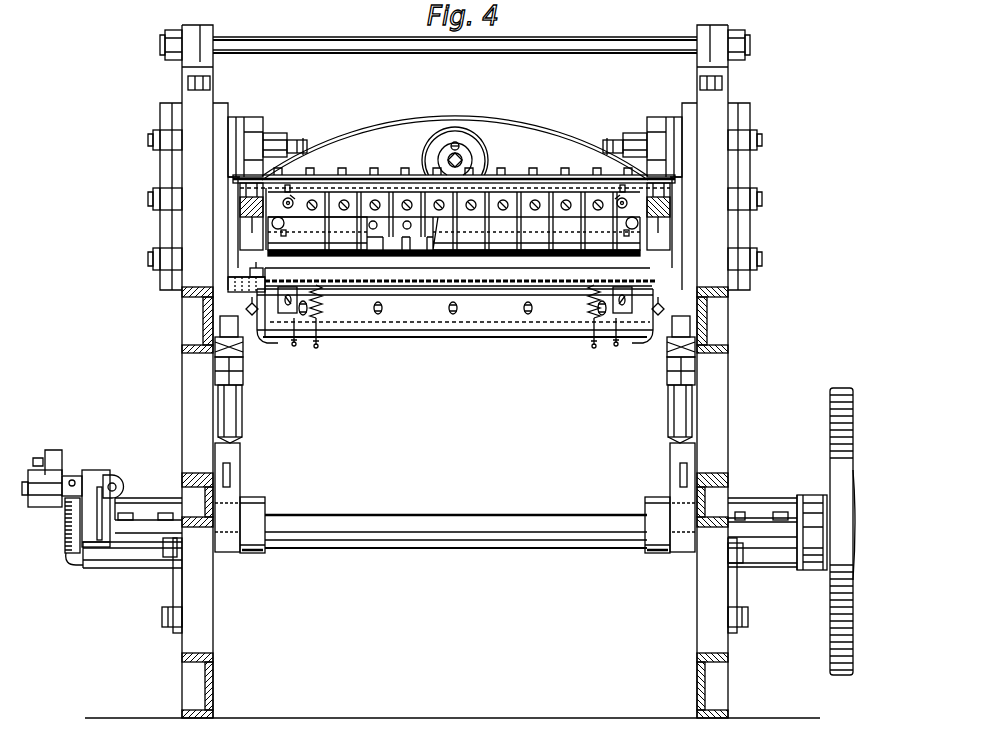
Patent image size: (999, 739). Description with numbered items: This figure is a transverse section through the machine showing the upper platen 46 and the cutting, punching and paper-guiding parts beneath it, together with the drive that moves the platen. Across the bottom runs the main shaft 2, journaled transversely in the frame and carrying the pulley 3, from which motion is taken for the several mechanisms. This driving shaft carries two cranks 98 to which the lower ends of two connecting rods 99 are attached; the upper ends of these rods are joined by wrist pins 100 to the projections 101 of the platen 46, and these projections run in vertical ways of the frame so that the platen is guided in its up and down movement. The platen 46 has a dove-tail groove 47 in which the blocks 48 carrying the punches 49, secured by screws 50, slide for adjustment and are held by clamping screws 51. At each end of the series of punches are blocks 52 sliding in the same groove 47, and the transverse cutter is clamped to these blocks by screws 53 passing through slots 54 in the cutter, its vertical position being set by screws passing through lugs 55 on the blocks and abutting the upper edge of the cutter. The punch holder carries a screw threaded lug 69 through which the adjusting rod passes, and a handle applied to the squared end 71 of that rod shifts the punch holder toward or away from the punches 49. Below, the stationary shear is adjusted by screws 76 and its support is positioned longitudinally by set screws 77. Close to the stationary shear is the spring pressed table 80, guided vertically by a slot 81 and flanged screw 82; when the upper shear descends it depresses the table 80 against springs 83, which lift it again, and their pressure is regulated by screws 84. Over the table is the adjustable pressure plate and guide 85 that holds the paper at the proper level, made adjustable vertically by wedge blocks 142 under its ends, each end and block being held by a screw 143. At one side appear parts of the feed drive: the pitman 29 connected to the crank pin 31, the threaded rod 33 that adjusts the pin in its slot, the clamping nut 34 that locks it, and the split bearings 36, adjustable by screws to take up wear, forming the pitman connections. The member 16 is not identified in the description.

The main shaft 2 is at (532, 550).
The pulley 3 is at (832, 620).
The knife bar 16 is at (449, 257).
The pitman 29 is at (58, 456).
The crank pin 31 is at (72, 478).
The threaded rod 33 is at (66, 518).
The clamping nut 34 is at (113, 485).
The split bearings 36 is at (96, 472).
The upper platen 46 is at (455, 148).
The dove-tail groove 47 is at (455, 219).
The blocks 48 is at (393, 252).
The punches 49 is at (418, 252).
The screws 50 is at (394, 218).
The clamping screws 51 is at (535, 173).
The blocks 52 is at (460, 205).
The screws 53 is at (286, 222).
The slots 54 is at (284, 188).
The lugs 55 is at (292, 198).
The screw threaded lug 69 is at (478, 148).
The squared end 71 is at (447, 162).
The screws 76 is at (294, 345).
The set screws 77 is at (665, 307).
The spring pressed table 80 is at (512, 283).
The slot 81 is at (272, 333).
The flanged screw 82 is at (464, 303).
The springs 83 is at (588, 303).
The screws 84 is at (317, 347).
The pressure plate and guide 85 is at (585, 280).
The cranks 98 is at (262, 499).
The connecting rods 99 is at (243, 413).
The wrist pins 100 is at (307, 146).
The projections 101 is at (263, 124).
The wedge blocks 142 is at (241, 296).
The screw 143 is at (258, 268).